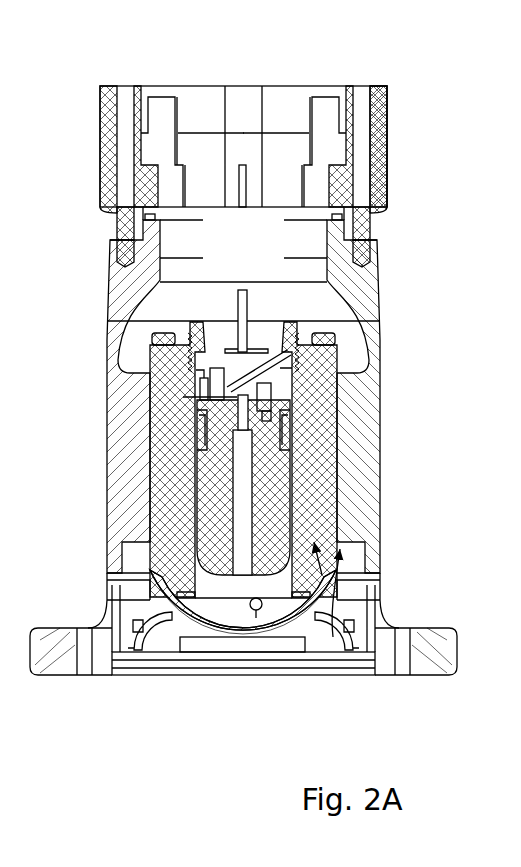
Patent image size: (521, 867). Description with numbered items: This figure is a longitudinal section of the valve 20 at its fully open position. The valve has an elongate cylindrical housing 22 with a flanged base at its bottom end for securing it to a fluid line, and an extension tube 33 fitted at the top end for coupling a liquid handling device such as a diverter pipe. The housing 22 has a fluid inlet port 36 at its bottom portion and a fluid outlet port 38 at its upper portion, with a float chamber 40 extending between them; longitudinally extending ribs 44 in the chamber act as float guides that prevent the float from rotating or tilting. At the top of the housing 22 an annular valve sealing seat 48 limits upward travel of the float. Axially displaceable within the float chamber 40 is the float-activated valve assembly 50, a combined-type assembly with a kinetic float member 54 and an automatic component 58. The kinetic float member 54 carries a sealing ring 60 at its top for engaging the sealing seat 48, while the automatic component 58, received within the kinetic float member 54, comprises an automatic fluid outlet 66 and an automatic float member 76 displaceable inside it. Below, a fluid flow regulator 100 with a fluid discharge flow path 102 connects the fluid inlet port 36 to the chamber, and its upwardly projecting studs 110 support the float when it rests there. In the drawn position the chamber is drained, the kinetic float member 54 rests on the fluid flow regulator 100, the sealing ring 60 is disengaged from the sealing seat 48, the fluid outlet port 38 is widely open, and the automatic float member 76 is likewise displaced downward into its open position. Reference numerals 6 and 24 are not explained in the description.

The valve 20 is at (414, 102).
The fluid outlet port 38 is at (202, 268).
The extension tube 33 is at (386, 157).
The automatic fluid outlet 66 is at (236, 340).
The automatic component 58 is at (261, 333).
The housing 22 is at (245, 436).
The annular valve sealing seat 48 is at (372, 283).
The float chamber 40 is at (135, 370).
The longitudinally extending ribs 44 is at (127, 490).
The sealing ring 60 is at (152, 335).
The float-activated valve assembly 50 is at (256, 449).
The automatic float member 76 is at (270, 473).
The fluid discharge flow path 102 is at (357, 557).
The fluid flow regulator 100 is at (207, 622).
The upwardly projecting studs 110 is at (267, 600).
The fluid inlet port 36 is at (228, 668).
The left mounting flange 6 is at (68, 643).
The right mounting flange 24 is at (436, 640).
The kinetic float member 54 is at (333, 637).